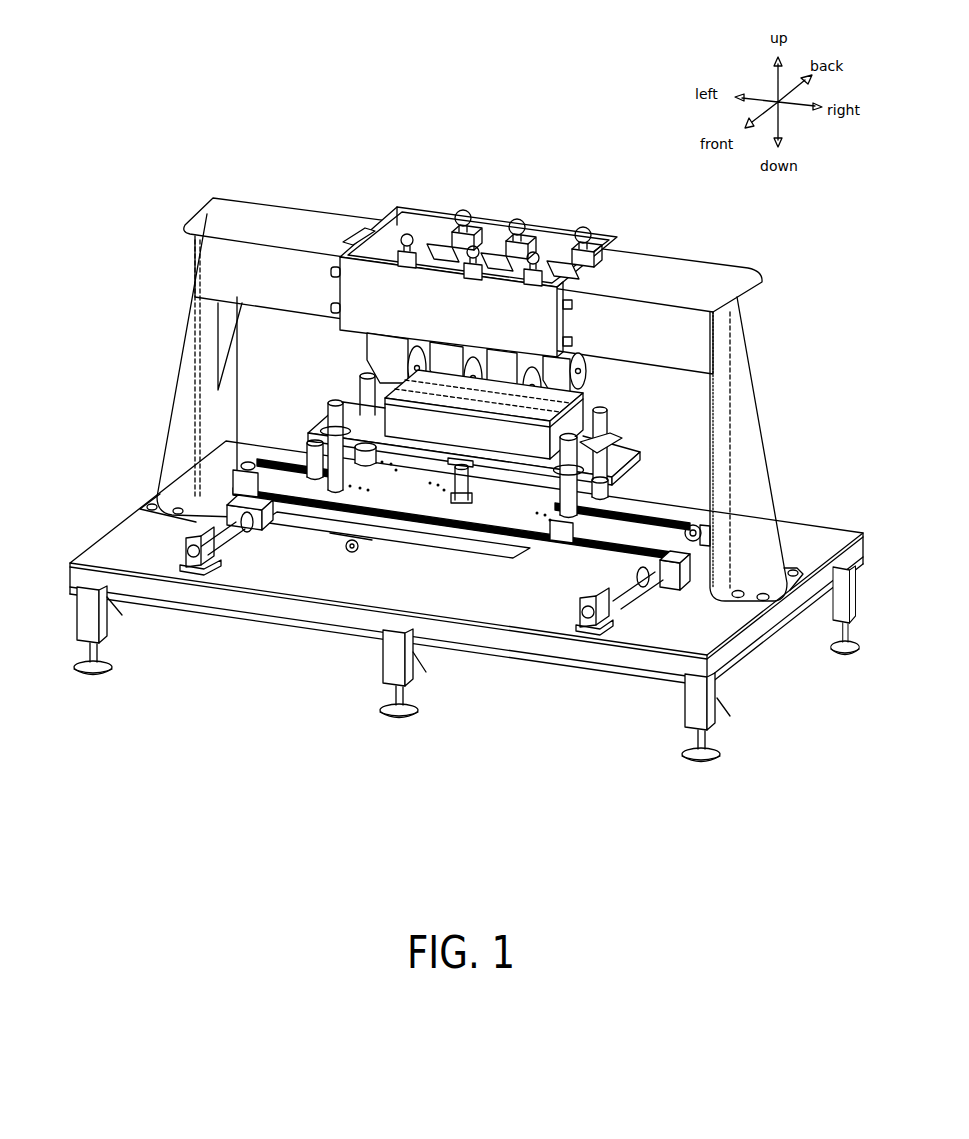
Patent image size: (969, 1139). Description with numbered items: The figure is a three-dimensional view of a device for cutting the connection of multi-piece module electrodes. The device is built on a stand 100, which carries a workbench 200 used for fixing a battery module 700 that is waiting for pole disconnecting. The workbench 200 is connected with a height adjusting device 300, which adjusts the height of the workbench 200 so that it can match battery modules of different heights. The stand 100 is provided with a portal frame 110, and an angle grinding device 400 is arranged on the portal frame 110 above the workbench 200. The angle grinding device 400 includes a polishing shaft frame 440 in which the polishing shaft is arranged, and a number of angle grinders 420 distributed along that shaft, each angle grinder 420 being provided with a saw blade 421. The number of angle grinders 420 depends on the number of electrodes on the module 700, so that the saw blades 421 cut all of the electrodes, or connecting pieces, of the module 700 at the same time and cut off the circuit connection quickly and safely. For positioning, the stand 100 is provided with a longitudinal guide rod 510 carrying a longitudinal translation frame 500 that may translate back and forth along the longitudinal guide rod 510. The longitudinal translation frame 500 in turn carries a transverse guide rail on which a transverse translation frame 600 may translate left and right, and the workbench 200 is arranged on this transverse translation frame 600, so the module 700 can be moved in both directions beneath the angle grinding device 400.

The stand 100 is at (555, 603).
The portal frame 110 is at (228, 263).
The workbench 200 is at (345, 432).
The height adjusting device 300 is at (462, 488).
The angle grinding device 400 is at (512, 300).
The angle grinder 420 is at (503, 372).
The saw blade 421 is at (585, 373).
The polishing shaft frame 440 is at (428, 210).
The longitudinal translation frame 500 is at (288, 487).
The longitudinal guide rod 510 is at (625, 587).
The transverse translation frame 600 is at (405, 487).
The module 700 is at (512, 440).